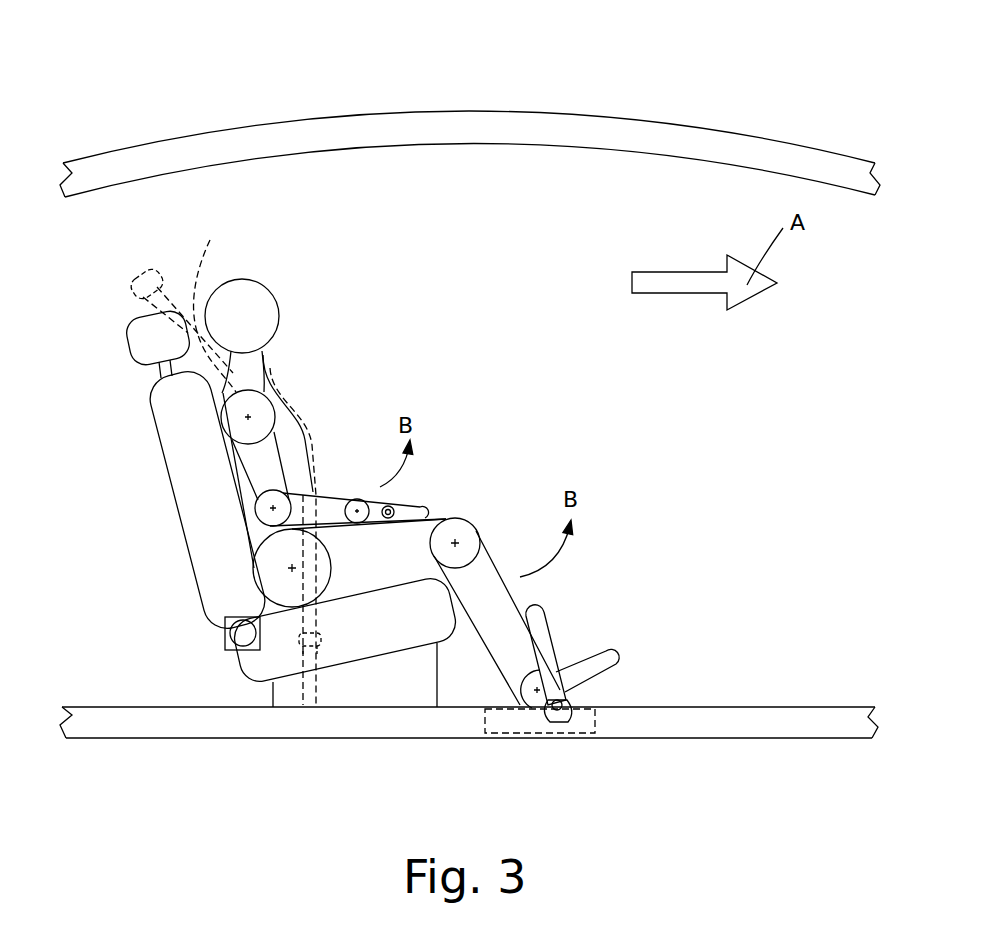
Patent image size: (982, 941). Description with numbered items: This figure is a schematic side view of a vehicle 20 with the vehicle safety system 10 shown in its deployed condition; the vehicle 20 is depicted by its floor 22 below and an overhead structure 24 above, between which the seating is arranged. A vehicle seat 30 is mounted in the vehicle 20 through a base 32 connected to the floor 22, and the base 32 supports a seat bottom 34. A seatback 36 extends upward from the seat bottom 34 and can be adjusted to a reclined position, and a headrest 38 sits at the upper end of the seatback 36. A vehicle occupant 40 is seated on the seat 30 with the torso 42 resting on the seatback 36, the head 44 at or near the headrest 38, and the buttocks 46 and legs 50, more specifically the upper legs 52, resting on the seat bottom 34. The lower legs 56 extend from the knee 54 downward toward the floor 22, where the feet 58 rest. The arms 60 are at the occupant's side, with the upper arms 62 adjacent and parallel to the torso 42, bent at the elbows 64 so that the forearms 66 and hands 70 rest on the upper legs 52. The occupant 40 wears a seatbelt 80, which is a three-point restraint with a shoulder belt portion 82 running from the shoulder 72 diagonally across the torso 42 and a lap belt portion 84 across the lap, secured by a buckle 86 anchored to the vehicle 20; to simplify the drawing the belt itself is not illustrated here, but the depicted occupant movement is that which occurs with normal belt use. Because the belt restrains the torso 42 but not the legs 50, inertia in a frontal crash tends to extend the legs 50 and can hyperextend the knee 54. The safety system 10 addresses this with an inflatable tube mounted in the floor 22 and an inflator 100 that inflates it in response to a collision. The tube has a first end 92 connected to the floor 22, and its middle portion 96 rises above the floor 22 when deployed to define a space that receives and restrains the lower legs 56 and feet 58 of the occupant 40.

The vehicle safety system 10 is at (550, 762).
The vehicle 20 is at (161, 96).
The floor 22 is at (450, 740).
The roof 24 is at (587, 133).
The vehicle seat 30 is at (175, 670).
The base 32 is at (390, 687).
The seat bottom 34 is at (347, 648).
The seatback 36 is at (207, 514).
The headrest 38 is at (140, 343).
The vehicle occupant 40 is at (359, 372).
The torso 42 is at (283, 407).
The head 44 is at (258, 303).
The buttocks 46 is at (288, 580).
The legs 50 is at (363, 577).
The upper legs 52 is at (453, 522).
The knee 54 is at (472, 538).
The lower legs 56 is at (497, 607).
The feet 58 is at (583, 670).
The arms 60 is at (260, 462).
The upper arms 62 is at (258, 483).
The elbows 64 is at (272, 510).
The forearms 66 is at (320, 503).
The hands 70 is at (393, 507).
The shoulder 72 is at (222, 426).
The seatbelt 80 is at (312, 463).
The shoulder belt portion 82 is at (182, 301).
The lap belt portion 84 is at (317, 572).
The buckle 86 is at (323, 640).
The first end 92 is at (567, 697).
The middle portion 96 is at (540, 633).
The inflator 100 is at (562, 715).